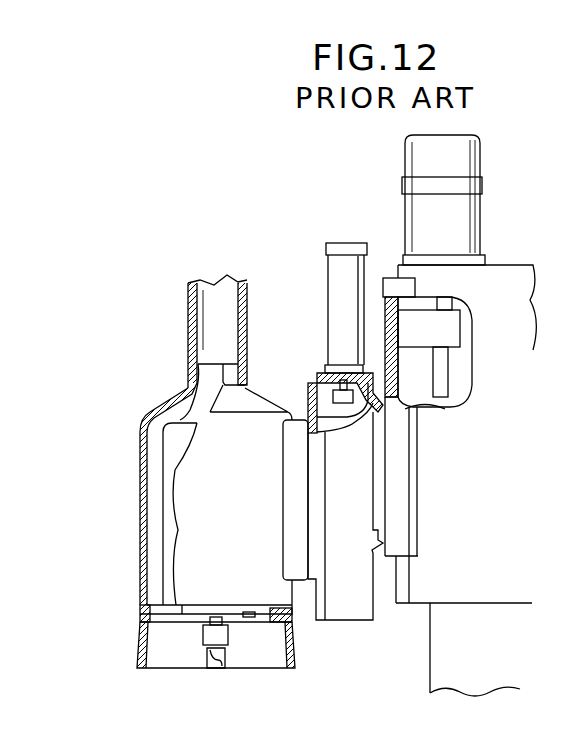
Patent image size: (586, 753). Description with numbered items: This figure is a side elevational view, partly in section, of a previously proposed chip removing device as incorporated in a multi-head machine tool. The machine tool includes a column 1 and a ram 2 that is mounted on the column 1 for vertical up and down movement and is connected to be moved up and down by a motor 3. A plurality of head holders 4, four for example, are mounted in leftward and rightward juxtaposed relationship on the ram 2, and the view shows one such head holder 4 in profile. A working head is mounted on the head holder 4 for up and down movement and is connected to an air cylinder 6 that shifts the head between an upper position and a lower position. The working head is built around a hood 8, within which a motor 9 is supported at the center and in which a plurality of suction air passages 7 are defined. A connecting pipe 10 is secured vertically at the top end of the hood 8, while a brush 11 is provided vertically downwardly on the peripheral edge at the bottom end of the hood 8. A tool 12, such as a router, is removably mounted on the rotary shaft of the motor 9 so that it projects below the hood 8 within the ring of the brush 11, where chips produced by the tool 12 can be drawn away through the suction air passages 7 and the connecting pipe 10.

The column 1 is at (470, 575).
The ram 2 is at (392, 355).
The motor 3 is at (458, 160).
The head holder 4 is at (344, 605).
The air cylinder 6 is at (337, 268).
The suction air passage 7 is at (155, 451).
The hood 8 is at (143, 491).
The motor 9 is at (170, 535).
The connecting pipe 10 is at (188, 302).
The brush 11 is at (140, 645).
The tool 12 is at (212, 655).